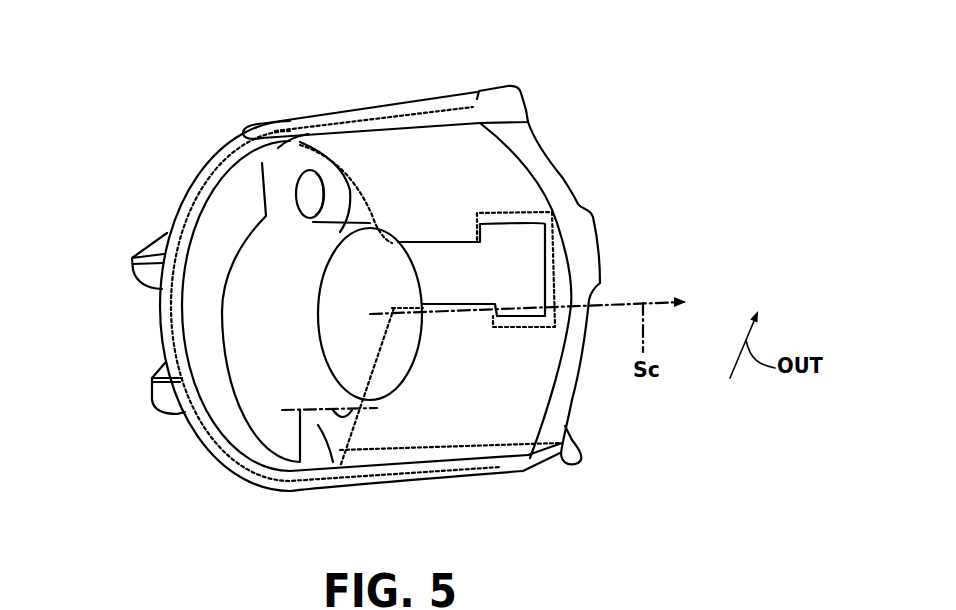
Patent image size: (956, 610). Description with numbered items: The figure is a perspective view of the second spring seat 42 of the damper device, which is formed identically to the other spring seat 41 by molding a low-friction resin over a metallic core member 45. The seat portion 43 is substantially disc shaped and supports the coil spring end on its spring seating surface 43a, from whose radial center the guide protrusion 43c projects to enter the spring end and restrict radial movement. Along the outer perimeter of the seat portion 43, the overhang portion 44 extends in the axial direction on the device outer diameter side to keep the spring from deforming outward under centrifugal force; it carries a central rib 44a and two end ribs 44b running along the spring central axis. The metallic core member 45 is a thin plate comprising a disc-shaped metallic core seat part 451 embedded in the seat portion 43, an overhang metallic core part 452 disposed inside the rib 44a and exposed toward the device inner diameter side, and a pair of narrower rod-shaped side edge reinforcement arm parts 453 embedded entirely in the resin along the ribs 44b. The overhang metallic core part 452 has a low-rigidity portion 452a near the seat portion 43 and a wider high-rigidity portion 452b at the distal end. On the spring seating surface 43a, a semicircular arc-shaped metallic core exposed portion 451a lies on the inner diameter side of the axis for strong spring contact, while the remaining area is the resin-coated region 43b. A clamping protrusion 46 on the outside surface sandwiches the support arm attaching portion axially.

The spring seat 41 is at (366, 302).
The second spring seat 42 is at (181, 190).
The seat portion 43 is at (157, 315).
The spring seating surface 43a is at (320, 470).
The coated region 43b is at (350, 190).
The guide protrusion 43c is at (353, 357).
The overhang portion 44 is at (560, 167).
The rib 44a is at (600, 263).
The rib 44b is at (527, 103).
The metallic core member 45 is at (208, 270).
The clamping protrusion 46 is at (130, 260).
The metallic core seat part 451 is at (190, 433).
The metallic core exposed portion 451a is at (207, 345).
The overhang metallic core part 452 is at (460, 232).
The low-rigidity portion 452a is at (446, 275).
The high-rigidity portion 452b is at (523, 262).
The side edge reinforcement arm part 453 is at (398, 115).